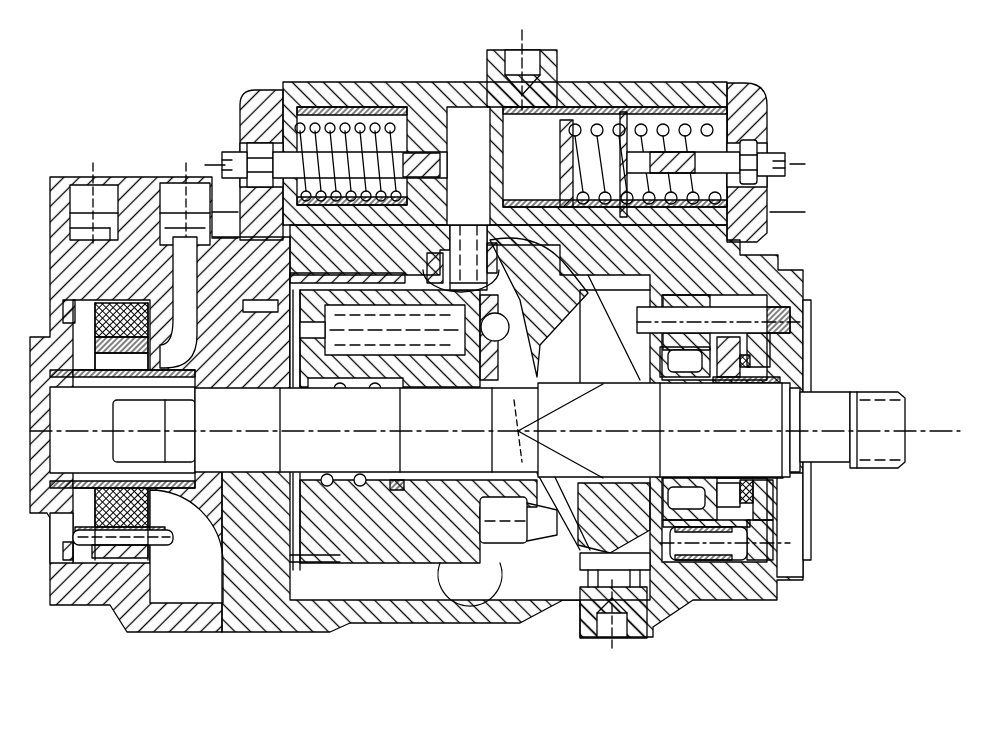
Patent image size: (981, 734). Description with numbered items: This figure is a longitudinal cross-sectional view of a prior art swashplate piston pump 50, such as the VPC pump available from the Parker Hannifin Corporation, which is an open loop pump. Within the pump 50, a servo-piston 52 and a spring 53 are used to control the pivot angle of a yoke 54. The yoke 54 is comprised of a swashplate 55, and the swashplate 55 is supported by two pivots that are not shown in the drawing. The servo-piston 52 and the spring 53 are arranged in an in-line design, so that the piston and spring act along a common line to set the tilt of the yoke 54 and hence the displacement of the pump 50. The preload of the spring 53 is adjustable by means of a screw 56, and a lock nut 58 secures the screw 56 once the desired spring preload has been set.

The swashplate piston pump 50 is at (495, 367).
The servo-piston 52 is at (423, 130).
The spring 53 is at (662, 125).
The yoke 54 is at (565, 280).
The swashplate 55 is at (630, 585).
The screw 56 is at (786, 155).
The lock nut 58 is at (750, 142).